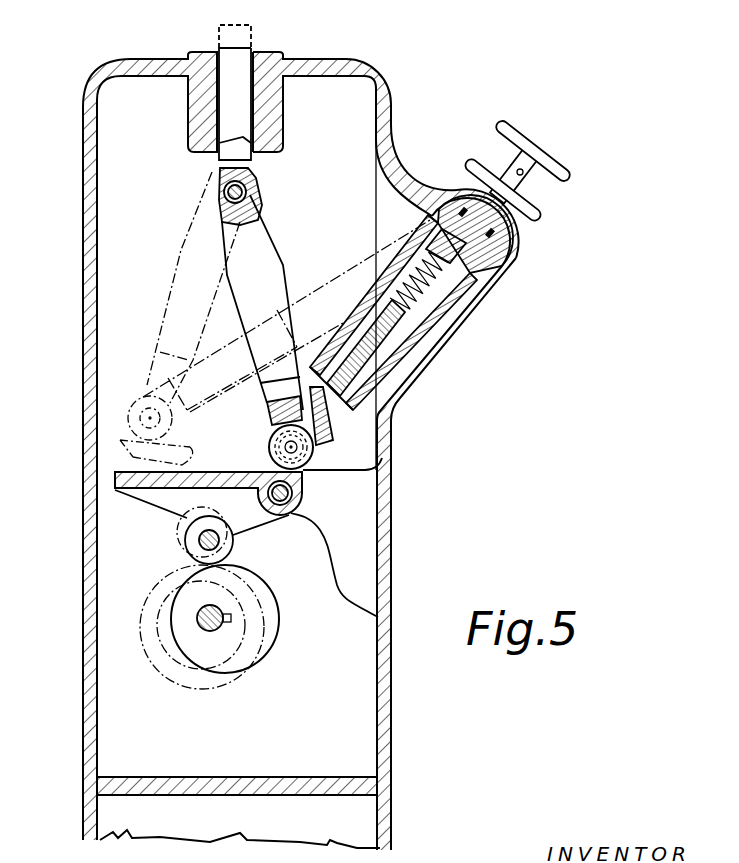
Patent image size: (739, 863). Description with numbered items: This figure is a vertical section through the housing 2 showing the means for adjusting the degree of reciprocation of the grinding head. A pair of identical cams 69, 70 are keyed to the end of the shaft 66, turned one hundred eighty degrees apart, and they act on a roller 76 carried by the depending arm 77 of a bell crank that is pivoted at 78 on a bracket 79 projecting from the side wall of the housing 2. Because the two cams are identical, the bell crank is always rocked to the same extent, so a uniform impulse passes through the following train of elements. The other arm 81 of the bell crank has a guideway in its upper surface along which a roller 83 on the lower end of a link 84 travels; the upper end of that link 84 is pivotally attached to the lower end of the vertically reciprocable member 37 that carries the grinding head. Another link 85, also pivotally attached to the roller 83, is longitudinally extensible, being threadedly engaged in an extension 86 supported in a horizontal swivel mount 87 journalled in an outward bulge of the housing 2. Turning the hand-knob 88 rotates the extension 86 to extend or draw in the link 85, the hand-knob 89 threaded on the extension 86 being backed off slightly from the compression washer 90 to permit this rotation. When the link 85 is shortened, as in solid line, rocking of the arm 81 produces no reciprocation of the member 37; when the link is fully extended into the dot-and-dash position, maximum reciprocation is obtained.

The housing 2 is at (385, 703).
The vertically reciprocable member 37 is at (243, 62).
The shaft 66 is at (215, 627).
The cam 69 is at (143, 638).
The cam 70 is at (280, 628).
The roller 76 is at (190, 548).
The depending arm 77 is at (262, 527).
The pivot 78 is at (300, 490).
The bracket 79 is at (360, 521).
The bell crank arm 81 is at (113, 490).
The roller 83 is at (313, 455).
The link 84 is at (180, 251).
The link 85 is at (330, 422).
The extension 86 is at (447, 323).
The horizontal swivel mount 87 is at (500, 252).
The hand-knob 88 is at (570, 173).
The hand-knob 89 is at (543, 215).
The compression washer 90 is at (462, 211).